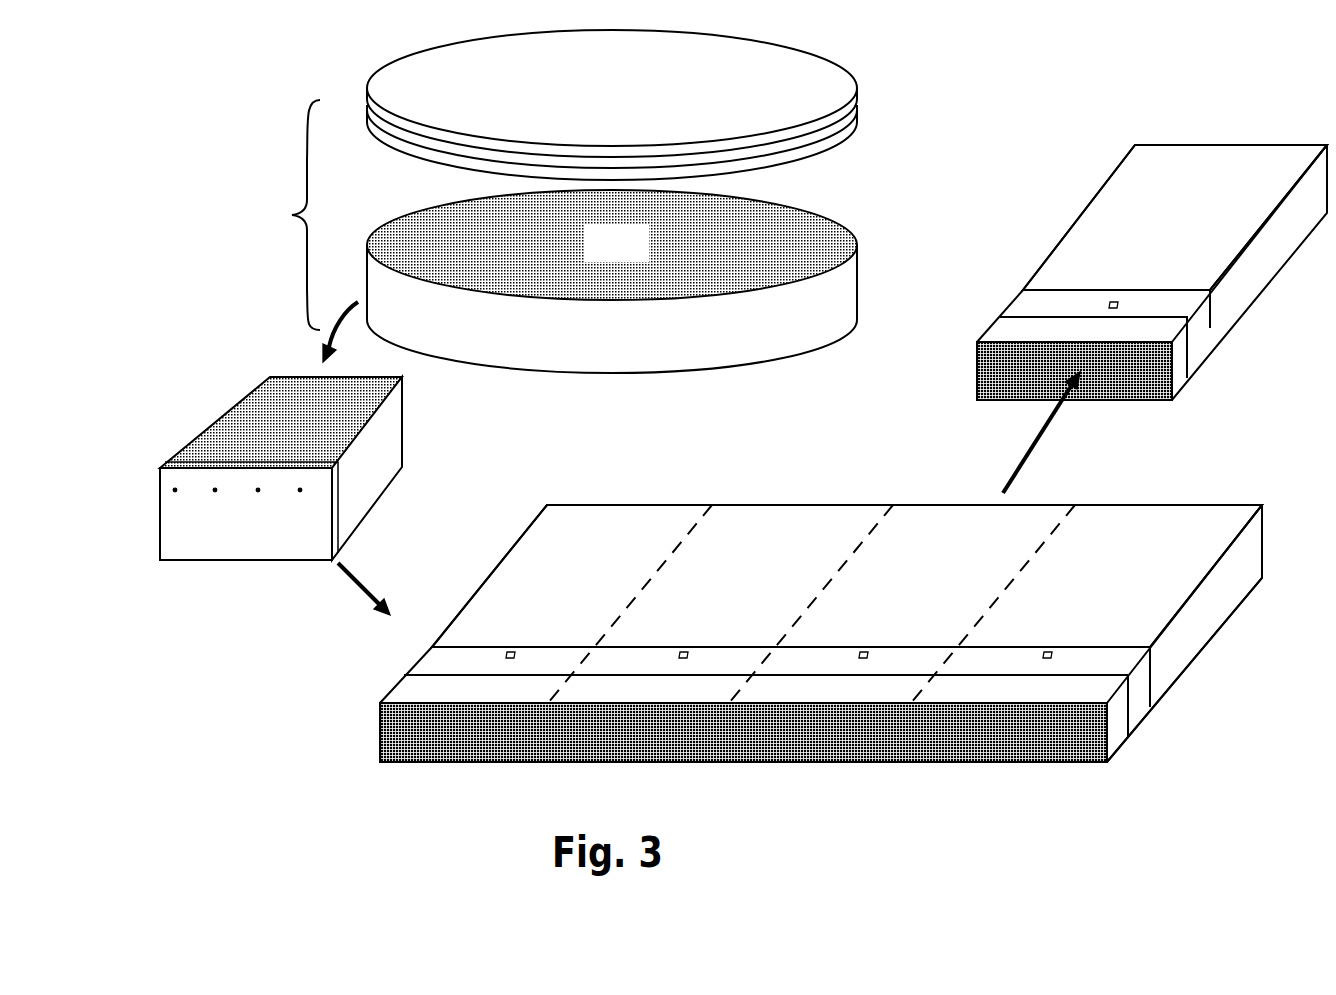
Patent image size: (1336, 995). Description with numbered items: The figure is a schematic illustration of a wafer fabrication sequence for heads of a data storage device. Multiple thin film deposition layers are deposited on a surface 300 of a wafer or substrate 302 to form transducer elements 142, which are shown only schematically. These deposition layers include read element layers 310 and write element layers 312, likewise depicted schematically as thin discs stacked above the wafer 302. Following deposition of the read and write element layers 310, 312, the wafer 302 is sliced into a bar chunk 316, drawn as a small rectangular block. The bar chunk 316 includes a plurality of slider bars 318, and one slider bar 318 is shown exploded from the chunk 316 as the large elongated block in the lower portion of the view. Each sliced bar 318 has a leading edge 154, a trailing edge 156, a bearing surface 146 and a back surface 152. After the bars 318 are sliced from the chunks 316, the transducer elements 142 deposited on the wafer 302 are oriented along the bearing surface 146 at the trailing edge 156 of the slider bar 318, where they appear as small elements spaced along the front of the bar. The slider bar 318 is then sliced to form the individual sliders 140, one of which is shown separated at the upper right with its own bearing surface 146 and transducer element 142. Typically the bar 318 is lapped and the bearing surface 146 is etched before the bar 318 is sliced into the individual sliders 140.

The slider 140 is at (1172, 490).
The transducer element 142 is at (294, 508).
The bearing surface 146 is at (898, 634).
The back surface 152 is at (1178, 678).
The leading edge 154 is at (775, 503).
The trailing edge 156 is at (978, 748).
The surface 300 is at (637, 255).
The wafer 302 is at (665, 281).
The read element layers 310 is at (872, 140).
The write element layers 312 is at (872, 92).
The bar chunk 316 is at (255, 350).
The slider bar 318 is at (168, 466).